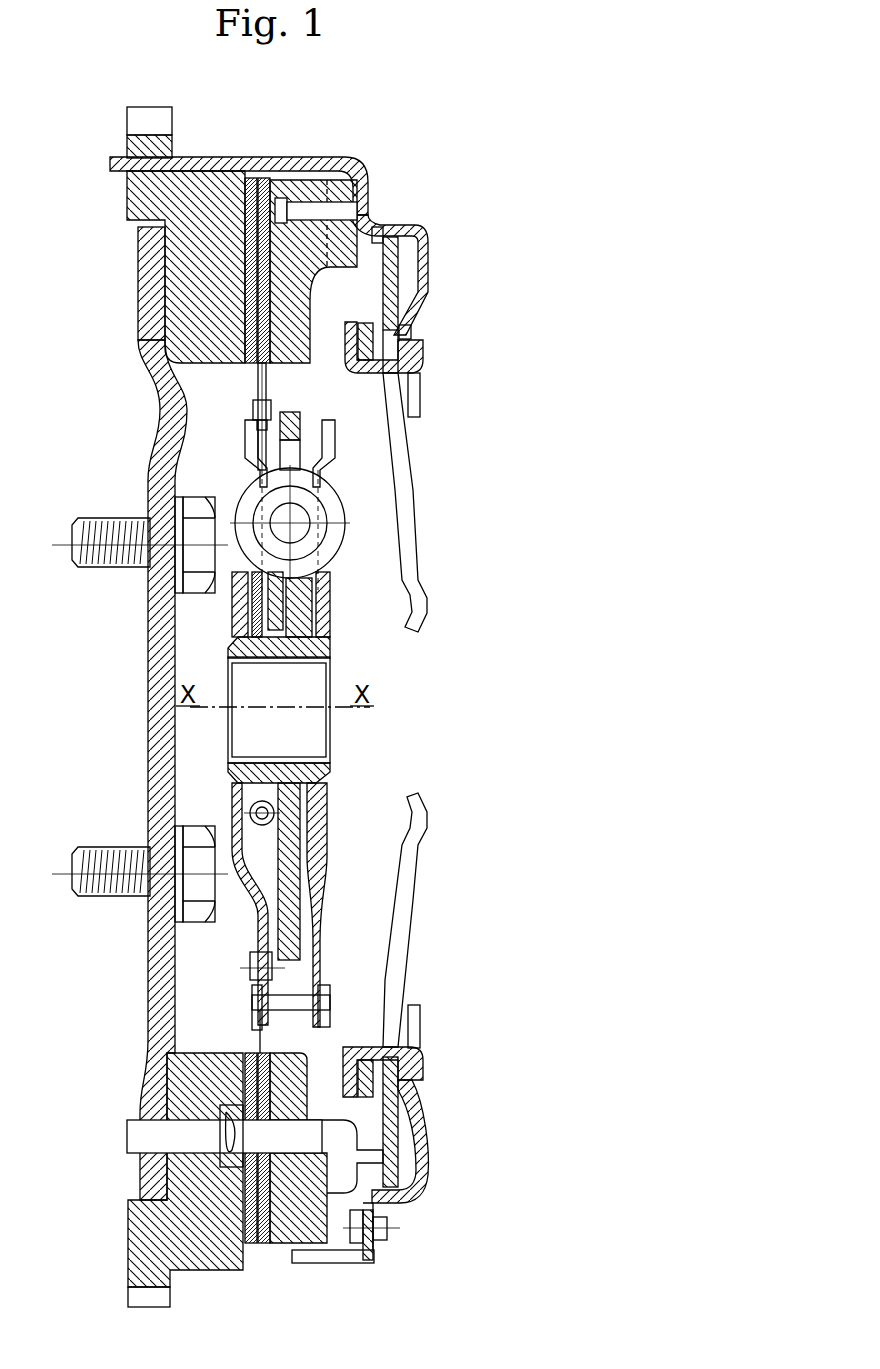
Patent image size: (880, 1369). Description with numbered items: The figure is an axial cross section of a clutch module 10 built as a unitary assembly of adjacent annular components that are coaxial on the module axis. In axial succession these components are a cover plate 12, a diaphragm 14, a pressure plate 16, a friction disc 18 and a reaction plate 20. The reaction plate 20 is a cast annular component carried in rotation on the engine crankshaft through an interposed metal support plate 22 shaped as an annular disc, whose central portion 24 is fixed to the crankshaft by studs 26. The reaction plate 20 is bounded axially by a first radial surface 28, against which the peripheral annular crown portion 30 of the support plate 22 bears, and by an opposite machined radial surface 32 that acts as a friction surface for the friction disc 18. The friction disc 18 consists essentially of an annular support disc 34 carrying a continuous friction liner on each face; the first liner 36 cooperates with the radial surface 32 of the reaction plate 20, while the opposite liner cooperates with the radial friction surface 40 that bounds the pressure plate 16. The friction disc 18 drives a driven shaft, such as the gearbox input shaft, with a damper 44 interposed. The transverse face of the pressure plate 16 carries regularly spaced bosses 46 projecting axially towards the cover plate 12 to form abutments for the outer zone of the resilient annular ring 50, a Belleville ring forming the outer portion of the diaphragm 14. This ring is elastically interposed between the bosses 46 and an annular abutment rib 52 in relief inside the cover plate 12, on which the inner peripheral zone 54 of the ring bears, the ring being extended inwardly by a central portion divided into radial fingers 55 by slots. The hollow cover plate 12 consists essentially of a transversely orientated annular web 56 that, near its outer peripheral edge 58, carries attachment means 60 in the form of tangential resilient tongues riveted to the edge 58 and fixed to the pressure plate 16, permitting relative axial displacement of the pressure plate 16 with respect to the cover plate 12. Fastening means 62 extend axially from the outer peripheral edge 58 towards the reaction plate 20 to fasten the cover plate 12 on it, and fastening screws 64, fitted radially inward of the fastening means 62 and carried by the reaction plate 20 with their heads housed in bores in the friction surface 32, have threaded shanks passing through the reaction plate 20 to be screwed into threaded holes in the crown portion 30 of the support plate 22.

The clutch cover assembly 10 is at (316, 641).
The cover plate 12 is at (453, 282).
The diaphragm 14 is at (415, 258).
The pressure plate 16 is at (328, 311).
The friction disc 18 is at (256, 1260).
The reaction plate 20 is at (211, 385).
The support plate 22 is at (140, 407).
The central portion 24 is at (148, 592).
The studs 26 is at (125, 562).
The first radial surface 28 is at (152, 280).
The peripheral annular crown portion 30 is at (150, 247).
The radial surface 32 is at (263, 178).
The support disc 34 is at (268, 390).
The first liner 36 is at (262, 406).
The radial friction surface 40 is at (250, 1240).
The damper 44 is at (355, 569).
The bosses 46 is at (376, 240).
The resilient annular ring 50 is at (400, 340).
The annular abutment rib 52 is at (405, 352).
The inner peripheral zone 54 is at (383, 308).
The radial fingers 55 is at (412, 543).
The annular web 56 is at (398, 330).
The outer peripheral edge 58 is at (370, 1260).
The attachment means 60 is at (384, 188).
The fastening means 62 is at (350, 148).
The fastening screws 64 is at (184, 1160).